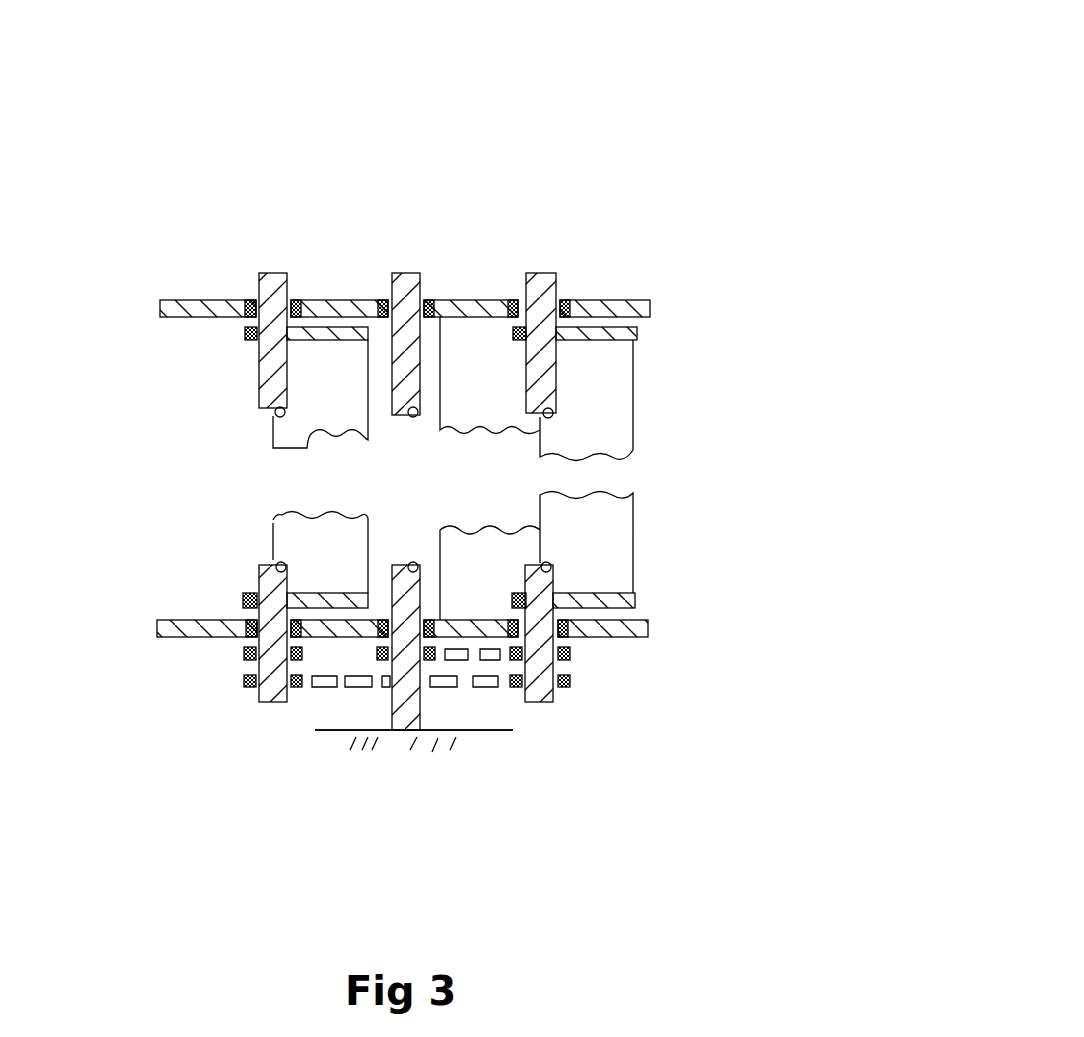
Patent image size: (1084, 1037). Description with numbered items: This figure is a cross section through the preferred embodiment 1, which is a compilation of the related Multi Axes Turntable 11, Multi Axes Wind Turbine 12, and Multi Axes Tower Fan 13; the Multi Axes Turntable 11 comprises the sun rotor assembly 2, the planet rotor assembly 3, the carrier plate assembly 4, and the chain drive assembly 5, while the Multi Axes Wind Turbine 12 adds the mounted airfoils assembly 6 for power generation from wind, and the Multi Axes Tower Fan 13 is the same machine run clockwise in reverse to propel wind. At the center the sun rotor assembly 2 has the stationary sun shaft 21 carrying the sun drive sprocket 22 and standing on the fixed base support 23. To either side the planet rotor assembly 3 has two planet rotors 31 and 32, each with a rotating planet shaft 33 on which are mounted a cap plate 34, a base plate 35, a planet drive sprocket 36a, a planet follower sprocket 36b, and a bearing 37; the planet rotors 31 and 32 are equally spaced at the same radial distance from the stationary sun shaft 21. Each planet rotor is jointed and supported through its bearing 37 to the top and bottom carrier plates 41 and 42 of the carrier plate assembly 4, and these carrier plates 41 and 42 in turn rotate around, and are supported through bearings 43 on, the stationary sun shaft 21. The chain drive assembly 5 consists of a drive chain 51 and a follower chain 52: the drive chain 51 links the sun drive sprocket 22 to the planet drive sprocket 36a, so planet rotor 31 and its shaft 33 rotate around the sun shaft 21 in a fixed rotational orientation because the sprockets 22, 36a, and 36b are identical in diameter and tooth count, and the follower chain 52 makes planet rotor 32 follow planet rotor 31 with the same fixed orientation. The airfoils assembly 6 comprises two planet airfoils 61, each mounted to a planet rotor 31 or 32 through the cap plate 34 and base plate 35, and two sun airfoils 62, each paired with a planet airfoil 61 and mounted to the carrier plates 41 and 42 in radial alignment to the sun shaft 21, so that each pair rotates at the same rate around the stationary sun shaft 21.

The preferred embodiment 1 is at (821, 82).
The Multi Axes Turntable 11 is at (795, 150).
The Multi Axes Wind Turbine 12 is at (880, 148).
The Multi Axes Tower Fan 13 is at (880, 179).
The sun rotor assembly 2 is at (820, 272).
The planet rotor assembly 3 is at (917, 263).
The stationary sun shaft 21 is at (405, 275).
The drive sprocket 22 is at (378, 658).
The fixed base support 23 is at (403, 732).
The planet rotor 31 is at (540, 275).
The planet rotor 32 is at (273, 273).
The rotating planet shaft 33 is at (545, 288).
The cap plate 34 is at (247, 340).
The base plate 35 is at (248, 593).
The drive sprocket 36a is at (250, 650).
The follower sprocket 36b is at (250, 683).
The bearing 37 is at (252, 303).
The carrier plate assembly 4 is at (828, 410).
The chain drive assembly 5 is at (924, 429).
The airfoils assembly 6 is at (924, 461).
The top carrier plate 41 is at (610, 300).
The bottom carrier plate 42 is at (618, 637).
The bearing 43 is at (432, 300).
The drive chain 51 is at (463, 660).
The follower chain 52 is at (320, 688).
The planet airfoil 61 is at (308, 433).
The sun airfoil 62 is at (440, 430).